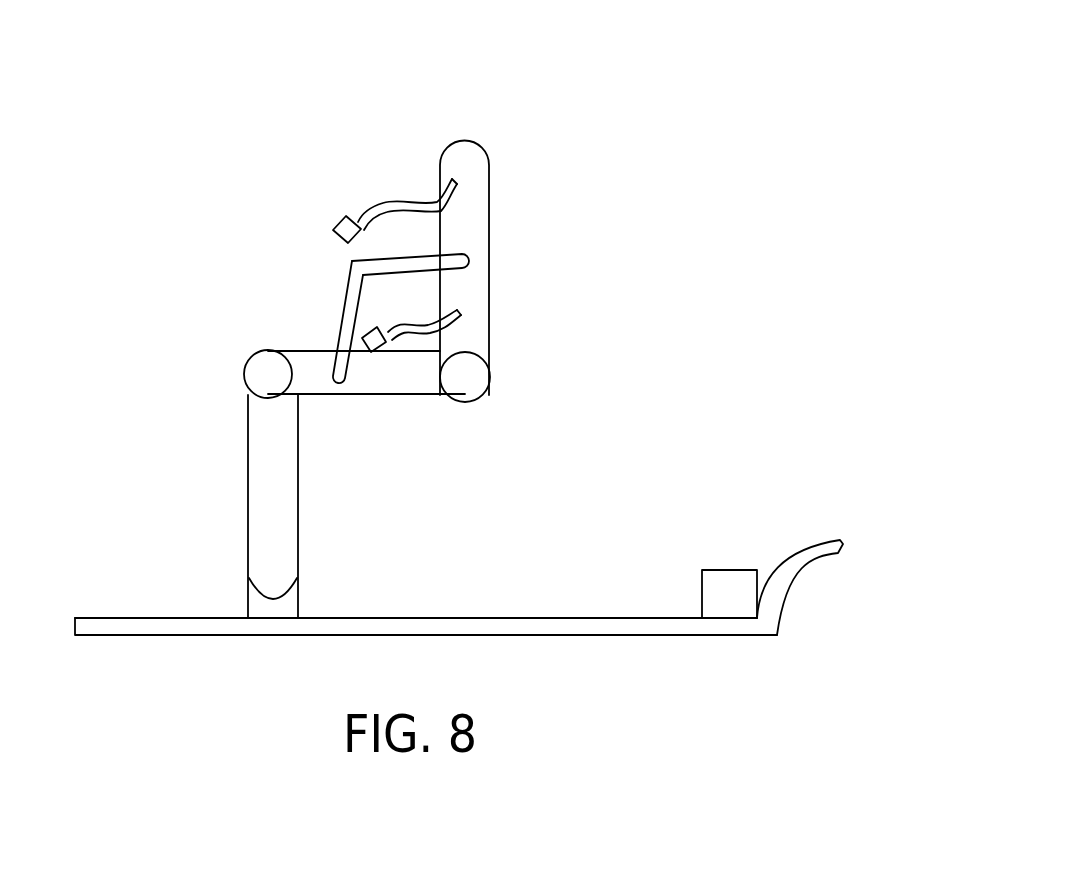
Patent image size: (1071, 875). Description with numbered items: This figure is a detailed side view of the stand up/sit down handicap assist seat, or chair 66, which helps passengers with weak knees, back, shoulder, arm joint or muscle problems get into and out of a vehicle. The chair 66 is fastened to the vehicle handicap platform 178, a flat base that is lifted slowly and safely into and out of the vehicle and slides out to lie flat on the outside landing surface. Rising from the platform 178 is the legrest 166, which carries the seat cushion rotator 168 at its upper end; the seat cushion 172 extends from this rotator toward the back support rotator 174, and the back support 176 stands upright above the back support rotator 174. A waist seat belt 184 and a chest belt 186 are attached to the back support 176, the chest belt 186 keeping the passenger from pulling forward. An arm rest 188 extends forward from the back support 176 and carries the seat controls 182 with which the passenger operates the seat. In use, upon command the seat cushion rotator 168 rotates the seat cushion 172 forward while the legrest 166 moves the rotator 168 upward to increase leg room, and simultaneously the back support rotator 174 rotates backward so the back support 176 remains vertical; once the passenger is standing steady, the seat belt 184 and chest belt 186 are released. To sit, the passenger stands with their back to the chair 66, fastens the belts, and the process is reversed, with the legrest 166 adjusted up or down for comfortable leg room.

The chair 66 is at (690, 84).
The legrest 166 is at (262, 485).
The seat cushion rotator 168 is at (262, 372).
The seat cushion 172 is at (328, 388).
The back support rotator 174 is at (475, 375).
The back support 176 is at (476, 226).
The vehicle handicap platform 178 is at (497, 620).
The seat controls 182 is at (733, 577).
The seat belt 184 is at (415, 334).
The chest belt 186 is at (360, 210).
The arm rest 188 is at (352, 261).